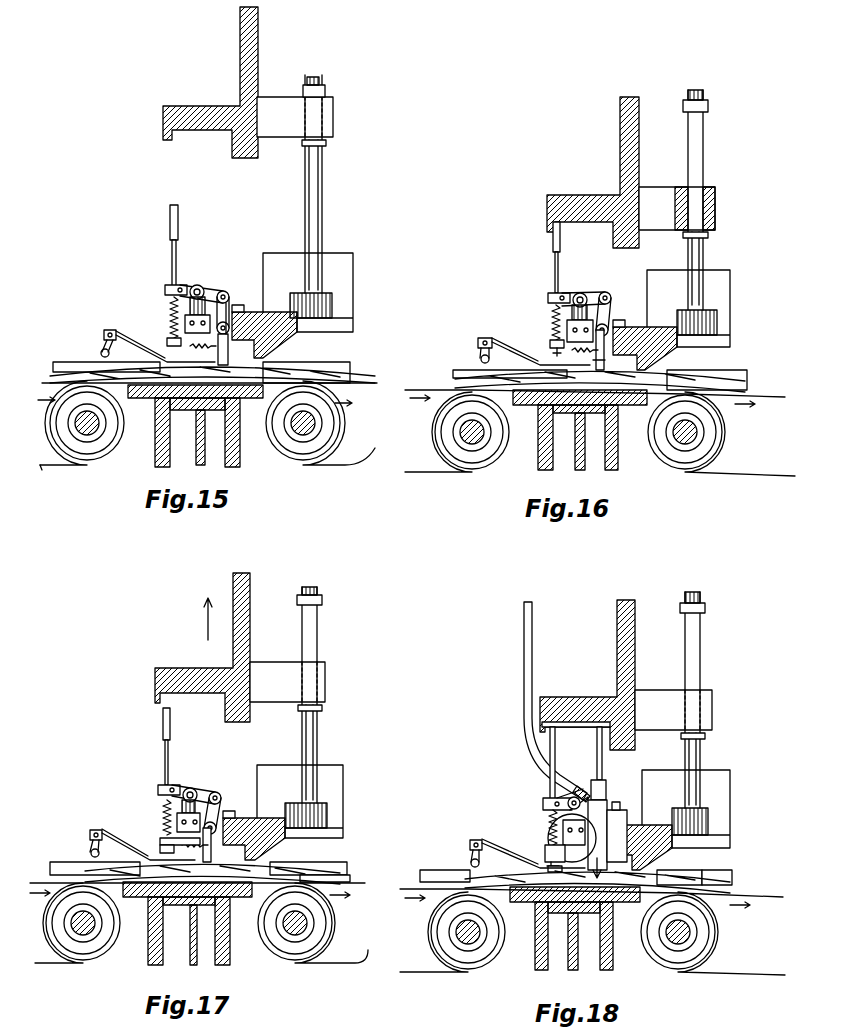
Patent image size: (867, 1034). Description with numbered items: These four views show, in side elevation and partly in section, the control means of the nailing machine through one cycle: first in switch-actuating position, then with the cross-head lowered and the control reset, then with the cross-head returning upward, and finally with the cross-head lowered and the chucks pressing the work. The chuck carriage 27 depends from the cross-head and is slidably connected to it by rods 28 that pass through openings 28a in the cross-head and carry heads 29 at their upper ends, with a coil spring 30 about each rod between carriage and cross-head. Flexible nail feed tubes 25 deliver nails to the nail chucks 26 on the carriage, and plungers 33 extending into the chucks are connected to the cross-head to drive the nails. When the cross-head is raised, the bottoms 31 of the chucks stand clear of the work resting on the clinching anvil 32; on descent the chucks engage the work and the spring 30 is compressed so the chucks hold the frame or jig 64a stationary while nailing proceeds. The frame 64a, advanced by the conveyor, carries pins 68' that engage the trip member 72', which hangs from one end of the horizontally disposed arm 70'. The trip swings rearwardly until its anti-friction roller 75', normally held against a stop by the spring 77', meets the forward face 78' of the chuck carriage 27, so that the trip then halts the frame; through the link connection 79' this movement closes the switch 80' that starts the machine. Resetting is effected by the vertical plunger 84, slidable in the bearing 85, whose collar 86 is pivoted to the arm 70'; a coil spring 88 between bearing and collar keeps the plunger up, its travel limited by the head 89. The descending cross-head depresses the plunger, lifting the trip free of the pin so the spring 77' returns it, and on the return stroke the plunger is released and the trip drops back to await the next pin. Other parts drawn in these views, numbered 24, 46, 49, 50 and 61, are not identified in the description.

In FIG. 15, the vertical post / carrier arm 24 is at (252, 60).
In FIG. 16, the vertical post / carrier arm 24 is at (639, 130).
In FIG. 17, the vertical post / carrier arm 24 is at (250, 592).
In FIG. 18, the vertical post / carrier arm 24 is at (635, 640).
In FIG. 18, the flexible nail feed tube 25 is at (533, 626).
In FIG. 18, the nail chuck 26 is at (600, 810).
In FIG. 15, the chuck carriage 27 is at (262, 312).
In FIG. 16, the chuck carriage 27 is at (645, 327).
In FIG. 18, the chuck carriage 27 is at (655, 851).
In FIG. 15, the rod 28 is at (324, 178).
In FIG. 16, the rod 28 is at (705, 126).
In FIG. 17, the rod 28 is at (318, 622).
In FIG. 18, the rod 28 is at (702, 633).
In FIG. 15, the opening 28a is at (335, 113).
In FIG. 16, the opening 28a is at (716, 198).
In FIG. 17, the opening 28a is at (330, 676).
In FIG. 18, the opening 28a is at (716, 701).
In FIG. 15, the head 29 is at (322, 88).
In FIG. 16, the head 29 is at (708, 105).
In FIG. 17, the head 29 is at (318, 602).
In FIG. 18, the head 29 is at (706, 612).
In FIG. 15, the coil spring 30 is at (327, 144).
In FIG. 16, the coil spring 30 is at (710, 235).
In FIG. 17, the coil spring 30 is at (323, 709).
In FIG. 18, the coil spring 30 is at (706, 738).
In FIG. 18, the chuck bottom 31 is at (580, 928).
In FIG. 15, the clinching anvil 32 is at (155, 447).
In FIG. 16, the clinching anvil 32 is at (538, 456).
In FIG. 17, the clinching anvil 32 is at (148, 948).
In FIG. 18, the clinching anvil 32 is at (613, 955).
In FIG. 18, the plunger 33 is at (603, 765).
In FIG. 15, the belt 46 is at (65, 465).
In FIG. 16, the belt 46 is at (438, 389).
In FIG. 17, the belt 46 is at (55, 882).
In FIG. 18, the belt 46 is at (412, 888).
In FIG. 15, the roller 49 is at (68, 433).
In FIG. 16, the roller 49 is at (452, 418).
In FIG. 17, the roller 49 is at (62, 935).
In FIG. 18, the roller 49 is at (445, 918).
In FIG. 15, the roller hub 50 is at (84, 421).
In FIG. 16, the roller hub 50 is at (468, 432).
In FIG. 17, the roller hub 50 is at (76, 920).
In FIG. 18, the roller hub 50 is at (462, 931).
In FIG. 15, the plate 61 is at (62, 362).
In FIG. 16, the plate 61 is at (465, 371).
In FIG. 17, the plate 61 is at (318, 872).
In FIG. 18, the plate 61 is at (733, 884).
In FIG. 15, the frame or jig 64a is at (314, 372).
In FIG. 16, the frame or jig 64a is at (700, 385).
In FIG. 17, the frame or jig 64a is at (345, 878).
In FIG. 18, the frame or jig 64a is at (704, 882).
In FIG. 15, the actuating device 68' is at (212, 362).
In FIG. 16, the actuating device 68' is at (600, 372).
In FIG. 17, the actuating device 68' is at (212, 864).
In FIG. 18, the actuating device 68' is at (600, 872).
In FIG. 15, the horizontally disposed arm 70' is at (201, 281).
In FIG. 16, the horizontally disposed arm 70' is at (586, 287).
In FIG. 17, the horizontally disposed arm 70' is at (193, 783).
In FIG. 15, the trip member 72' is at (231, 286).
In FIG. 16, the trip member 72' is at (618, 293).
In FIG. 17, the trip member 72' is at (226, 789).
In FIG. 16, the anti-friction roller 75' is at (617, 334).
In FIG. 17, the anti-friction roller 75' is at (220, 846).
In FIG. 15, the spring 77' is at (235, 334).
In FIG. 17, the spring 77' is at (164, 831).
In FIG. 18, the spring 77' is at (546, 846).
In FIG. 15, the forward face of chuck carriage 78' is at (238, 314).
In FIG. 16, the forward face of chuck carriage 78' is at (611, 359).
In FIG. 17, the forward face of chuck carriage 78' is at (228, 815).
In FIG. 15, the link connection 79' is at (165, 333).
In FIG. 16, the link connection 79' is at (541, 346).
In FIG. 17, the link connection 79' is at (148, 835).
In FIG. 18, the link connection 79' is at (533, 845).
In FIG. 15, the switch 80' is at (96, 338).
In FIG. 16, the switch 80' is at (472, 345).
In FIG. 17, the switch 80' is at (82, 840).
In FIG. 18, the switch 80' is at (463, 848).
In FIG. 15, the vertical plunger 84 is at (178, 238).
In FIG. 16, the vertical plunger 84 is at (560, 268).
In FIG. 17, the vertical plunger 84 is at (171, 740).
In FIG. 18, the vertical plunger 84 is at (556, 748).
In FIG. 15, the bearing 85 is at (185, 318).
In FIG. 17, the bearing 85 is at (177, 818).
In FIG. 18, the bearing 85 is at (563, 836).
In FIG. 15, the collar 86 is at (168, 286).
In FIG. 16, the collar 86 is at (550, 295).
In FIG. 17, the collar 86 is at (160, 788).
In FIG. 18, the collar 86 is at (548, 798).
In FIG. 16, the coil spring 88 is at (553, 308).
In FIG. 18, the coil spring 88 is at (550, 815).
In FIG. 15, the head 89 is at (168, 342).
In FIG. 16, the head 89 is at (553, 344).
In FIG. 17, the head 89 is at (167, 853).
In FIG. 18, the head 89 is at (553, 880).